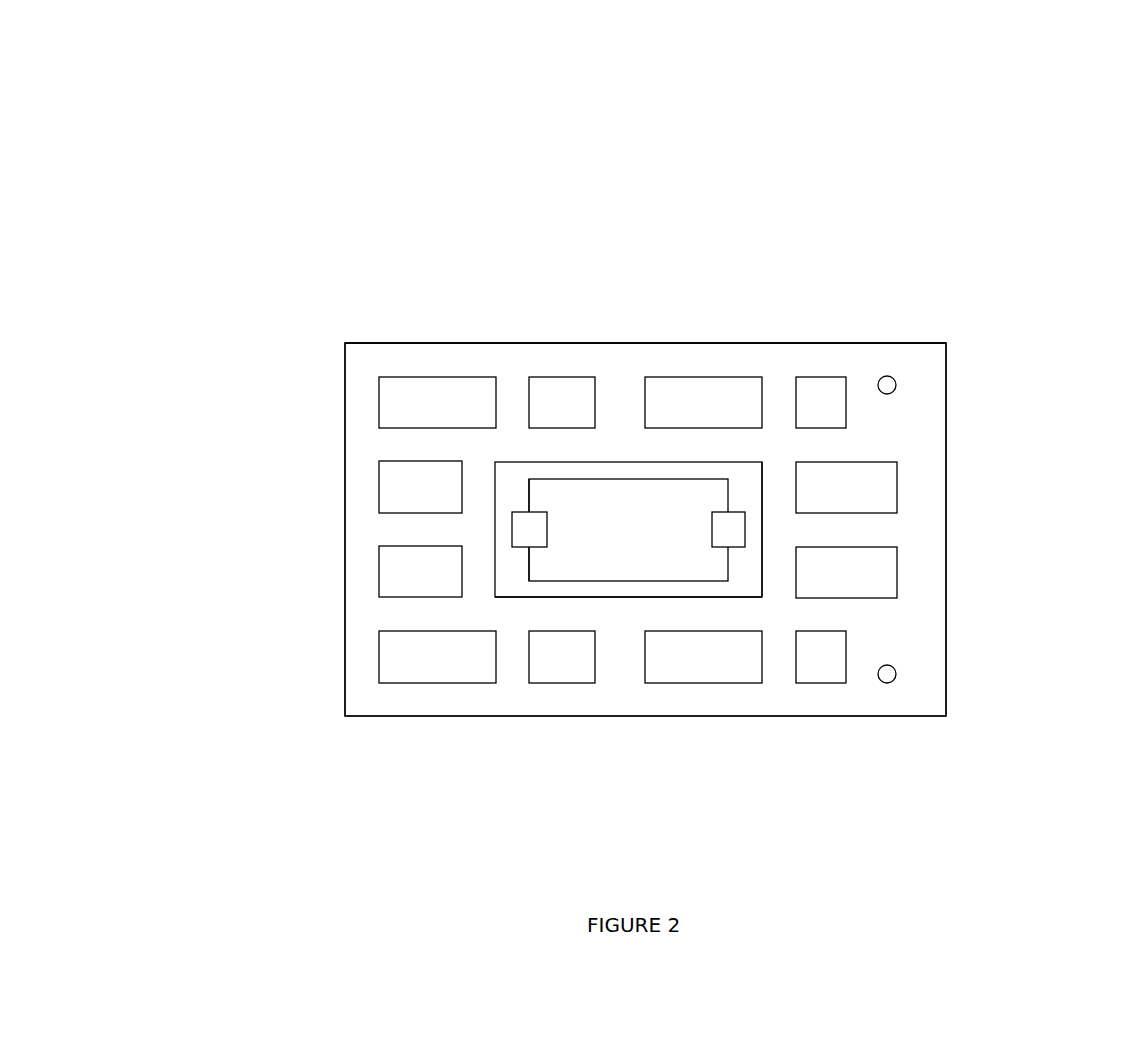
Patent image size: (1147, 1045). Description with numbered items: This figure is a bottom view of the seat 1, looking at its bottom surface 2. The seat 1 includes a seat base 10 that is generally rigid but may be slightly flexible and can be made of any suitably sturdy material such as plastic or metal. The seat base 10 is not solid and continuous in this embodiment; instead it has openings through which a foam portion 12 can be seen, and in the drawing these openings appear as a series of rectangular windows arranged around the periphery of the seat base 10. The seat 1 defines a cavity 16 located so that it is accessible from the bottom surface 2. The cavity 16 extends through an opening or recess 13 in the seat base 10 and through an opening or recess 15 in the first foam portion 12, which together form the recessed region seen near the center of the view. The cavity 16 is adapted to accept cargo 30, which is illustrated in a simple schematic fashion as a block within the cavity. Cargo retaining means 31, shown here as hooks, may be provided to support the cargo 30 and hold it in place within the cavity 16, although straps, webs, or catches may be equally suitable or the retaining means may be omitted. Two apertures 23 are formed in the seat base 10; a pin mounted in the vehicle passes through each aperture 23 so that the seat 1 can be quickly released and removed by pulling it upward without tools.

The seat 1 is at (922, 125).
The bottom surface 2 is at (792, 327).
The seat base 10 is at (372, 326).
The foam portion 12 is at (370, 614).
The opening or recess 13 is at (734, 474).
The opening or recess 15 is at (768, 617).
The cavity 16 is at (510, 477).
The aperture 23 is at (889, 359).
The cargo 30 is at (609, 543).
The cargo retaining means 31 is at (528, 564).